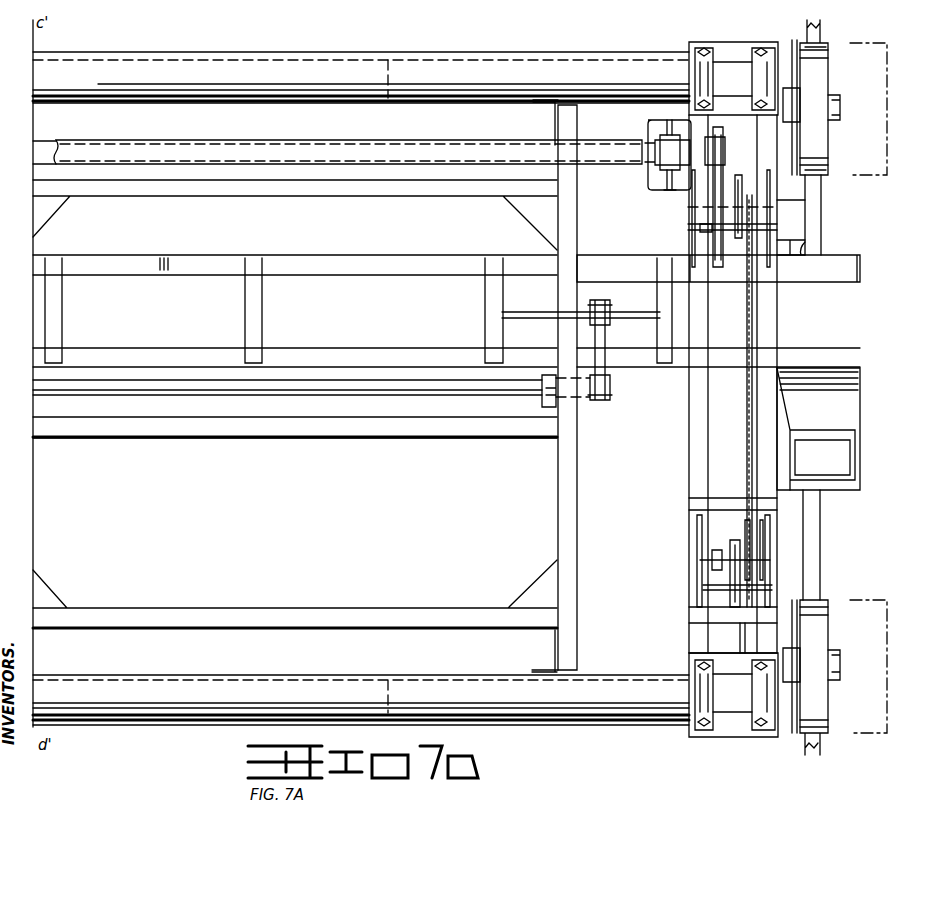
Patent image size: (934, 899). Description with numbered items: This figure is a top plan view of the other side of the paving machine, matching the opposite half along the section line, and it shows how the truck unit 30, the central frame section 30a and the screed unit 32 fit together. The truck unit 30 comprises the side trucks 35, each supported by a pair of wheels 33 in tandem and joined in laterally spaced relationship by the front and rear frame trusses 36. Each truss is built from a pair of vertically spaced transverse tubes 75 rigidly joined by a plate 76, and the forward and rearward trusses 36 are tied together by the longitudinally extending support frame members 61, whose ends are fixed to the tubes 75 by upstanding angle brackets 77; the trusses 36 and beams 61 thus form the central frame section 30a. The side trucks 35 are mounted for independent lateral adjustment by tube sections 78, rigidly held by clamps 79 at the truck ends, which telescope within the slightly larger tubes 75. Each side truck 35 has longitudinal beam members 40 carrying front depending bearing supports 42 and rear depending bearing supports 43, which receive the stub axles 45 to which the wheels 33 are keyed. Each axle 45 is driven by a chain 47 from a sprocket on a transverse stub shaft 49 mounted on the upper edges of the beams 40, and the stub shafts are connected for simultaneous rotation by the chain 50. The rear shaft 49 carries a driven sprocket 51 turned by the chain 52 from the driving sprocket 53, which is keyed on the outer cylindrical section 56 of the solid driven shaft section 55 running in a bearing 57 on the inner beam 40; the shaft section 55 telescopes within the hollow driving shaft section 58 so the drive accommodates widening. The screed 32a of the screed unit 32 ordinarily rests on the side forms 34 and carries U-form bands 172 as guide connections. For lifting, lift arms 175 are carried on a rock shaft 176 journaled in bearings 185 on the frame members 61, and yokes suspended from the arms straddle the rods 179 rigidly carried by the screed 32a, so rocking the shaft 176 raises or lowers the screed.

The truck unit 30 is at (528, 730).
The central frame section 30a is at (548, 460).
The screed unit 32 is at (852, 494).
The screed 32a is at (186, 256).
The wheels 33 is at (830, 151).
The side forms 34 is at (822, 538).
The side trucks 35 is at (684, 636).
The frame trusses 36 is at (353, 52).
The beam members 40 is at (689, 460).
The front depending bearing supports 42 is at (780, 582).
The rear depending bearing supports 43 is at (765, 208).
The stub axles 45 is at (790, 85).
The chain 47 is at (740, 184).
The transverse stub shaft 49 is at (712, 226).
The chain 50 is at (748, 472).
The driven sprocket 51 is at (696, 228).
The chain 52 is at (710, 134).
The driving sprocket 53 is at (696, 192).
The driven shaft section 55 is at (52, 142).
The outer cylindrical section 56 is at (668, 176).
The bearing 57 is at (665, 136).
The hollow driving shaft section 58 is at (260, 140).
The support frame members 61 is at (557, 503).
The tubes 75 is at (236, 62).
The plate 76 is at (514, 52).
The angle brackets 77 is at (554, 128).
The tube sections 78 is at (730, 62).
The clamps 79 is at (697, 62).
The U-form bands 172 is at (814, 234).
The lift arms 175 is at (606, 334).
The rock shaft 176 is at (268, 396).
The rods 179 is at (612, 306).
The bearings 185 is at (542, 406).